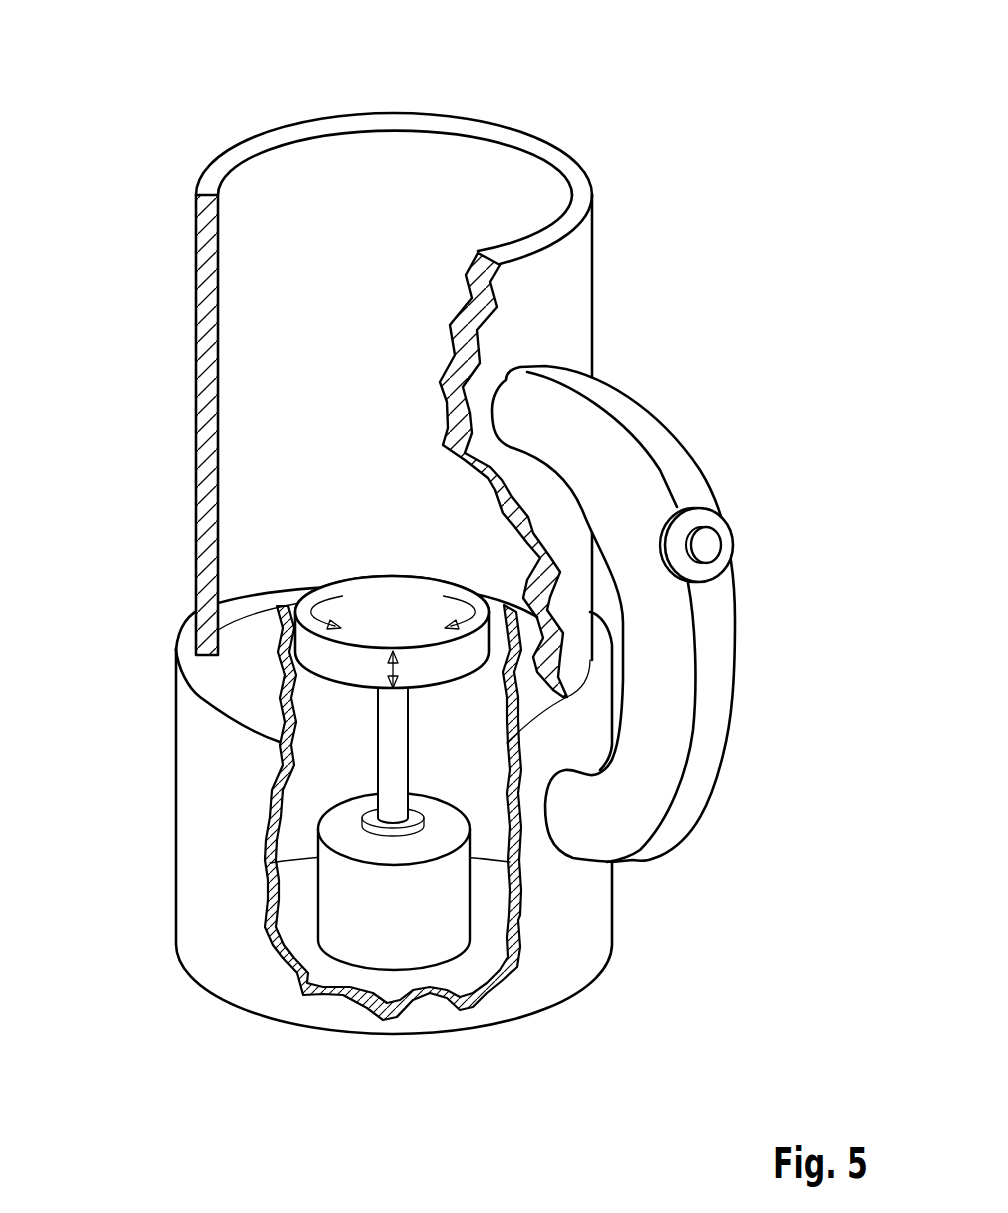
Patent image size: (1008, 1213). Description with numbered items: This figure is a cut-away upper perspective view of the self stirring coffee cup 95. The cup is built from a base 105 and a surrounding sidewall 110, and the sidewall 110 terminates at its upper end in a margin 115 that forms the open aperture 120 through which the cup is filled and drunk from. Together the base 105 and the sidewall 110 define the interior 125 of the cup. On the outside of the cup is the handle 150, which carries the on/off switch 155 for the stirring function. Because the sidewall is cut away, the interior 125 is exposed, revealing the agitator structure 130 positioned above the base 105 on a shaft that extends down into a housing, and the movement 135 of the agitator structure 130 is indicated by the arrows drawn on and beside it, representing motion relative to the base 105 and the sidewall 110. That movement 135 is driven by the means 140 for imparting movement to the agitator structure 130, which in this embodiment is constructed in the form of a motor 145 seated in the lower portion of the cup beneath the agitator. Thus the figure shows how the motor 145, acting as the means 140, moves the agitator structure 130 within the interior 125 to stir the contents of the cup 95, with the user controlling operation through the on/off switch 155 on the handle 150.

The self stirring coffee cup 95 is at (593, 102).
The base 105 is at (197, 830).
The surrounding sidewall 110 is at (206, 452).
The margin 115 is at (229, 162).
The open aperture 120 is at (353, 167).
The interior 125 is at (453, 233).
The agitator structure 130 is at (386, 599).
The movement 135 is at (450, 628).
The means for imparting movement 140 is at (413, 902).
The motor 145 is at (418, 943).
The handle 150 is at (682, 706).
The on/off switch 155 is at (707, 542).